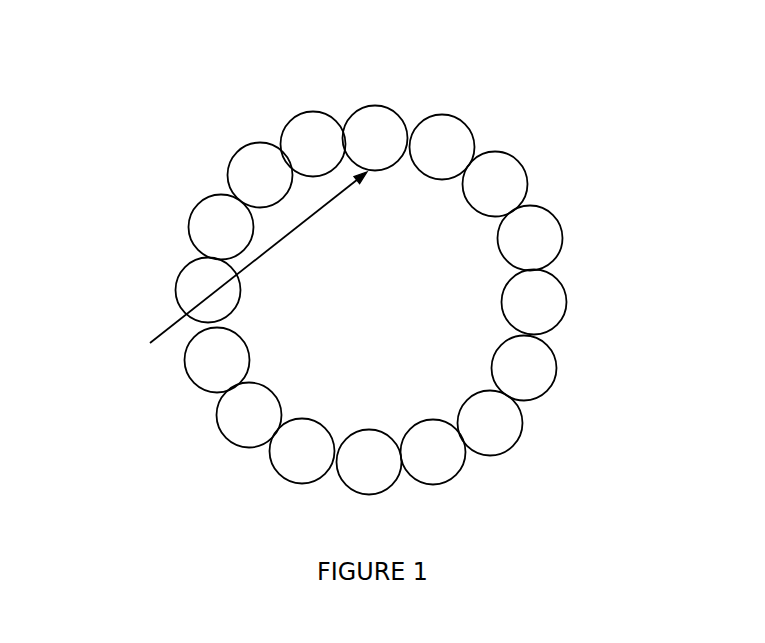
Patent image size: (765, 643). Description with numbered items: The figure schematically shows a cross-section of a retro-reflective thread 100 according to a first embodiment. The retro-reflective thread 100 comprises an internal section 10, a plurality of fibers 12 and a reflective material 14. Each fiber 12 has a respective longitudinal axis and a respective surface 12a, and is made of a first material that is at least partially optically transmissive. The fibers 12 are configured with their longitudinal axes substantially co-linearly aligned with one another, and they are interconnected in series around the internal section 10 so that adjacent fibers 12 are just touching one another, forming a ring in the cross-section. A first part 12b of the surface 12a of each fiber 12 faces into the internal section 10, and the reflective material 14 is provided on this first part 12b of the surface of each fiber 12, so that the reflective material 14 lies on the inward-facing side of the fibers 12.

The retro-reflective thread 100 is at (158, 72).
The internal section 10 is at (411, 318).
The fiber 12 is at (500, 181).
The surface 12a is at (573, 221).
The first part of the surface 12b is at (336, 420).
The reflective material 14 is at (246, 273).